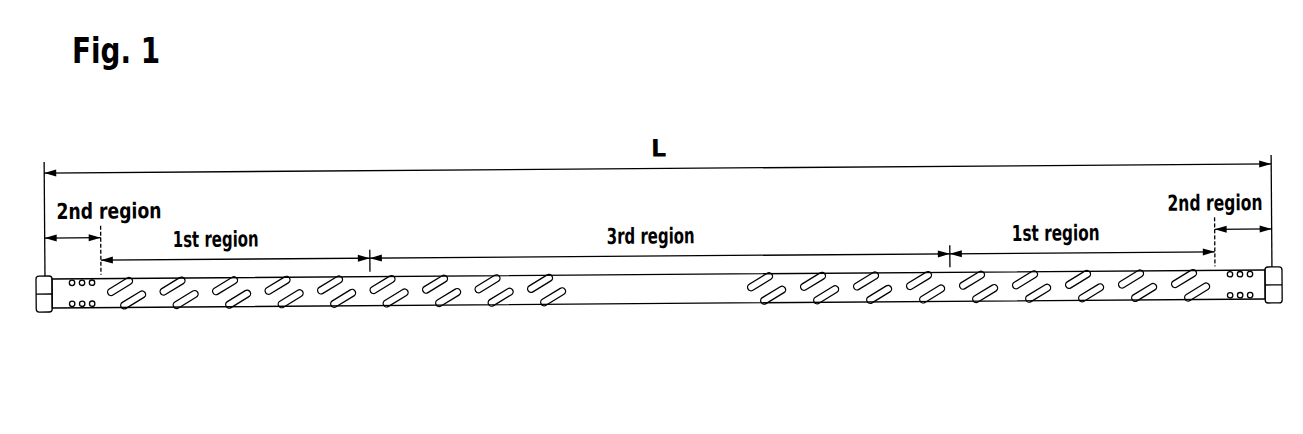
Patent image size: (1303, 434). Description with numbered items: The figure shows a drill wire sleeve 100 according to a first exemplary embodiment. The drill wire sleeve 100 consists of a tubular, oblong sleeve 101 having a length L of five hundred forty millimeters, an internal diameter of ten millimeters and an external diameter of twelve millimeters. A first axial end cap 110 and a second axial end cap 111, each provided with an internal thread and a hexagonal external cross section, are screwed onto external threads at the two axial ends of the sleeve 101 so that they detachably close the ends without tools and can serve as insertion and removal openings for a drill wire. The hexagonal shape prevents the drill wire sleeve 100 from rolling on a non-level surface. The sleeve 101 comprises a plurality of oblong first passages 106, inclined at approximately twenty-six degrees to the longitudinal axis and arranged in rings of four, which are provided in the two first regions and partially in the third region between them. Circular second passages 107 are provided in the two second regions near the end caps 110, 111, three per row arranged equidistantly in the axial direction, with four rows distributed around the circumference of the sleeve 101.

The drill wire sleeve 100 is at (951, 152).
The tubular, oblong sleeve 101 is at (655, 308).
The first passages 106 is at (1035, 306).
The second passages 107 is at (1228, 309).
The first axial end cap 110 is at (1273, 303).
The second axial end cap 111 is at (45, 311).